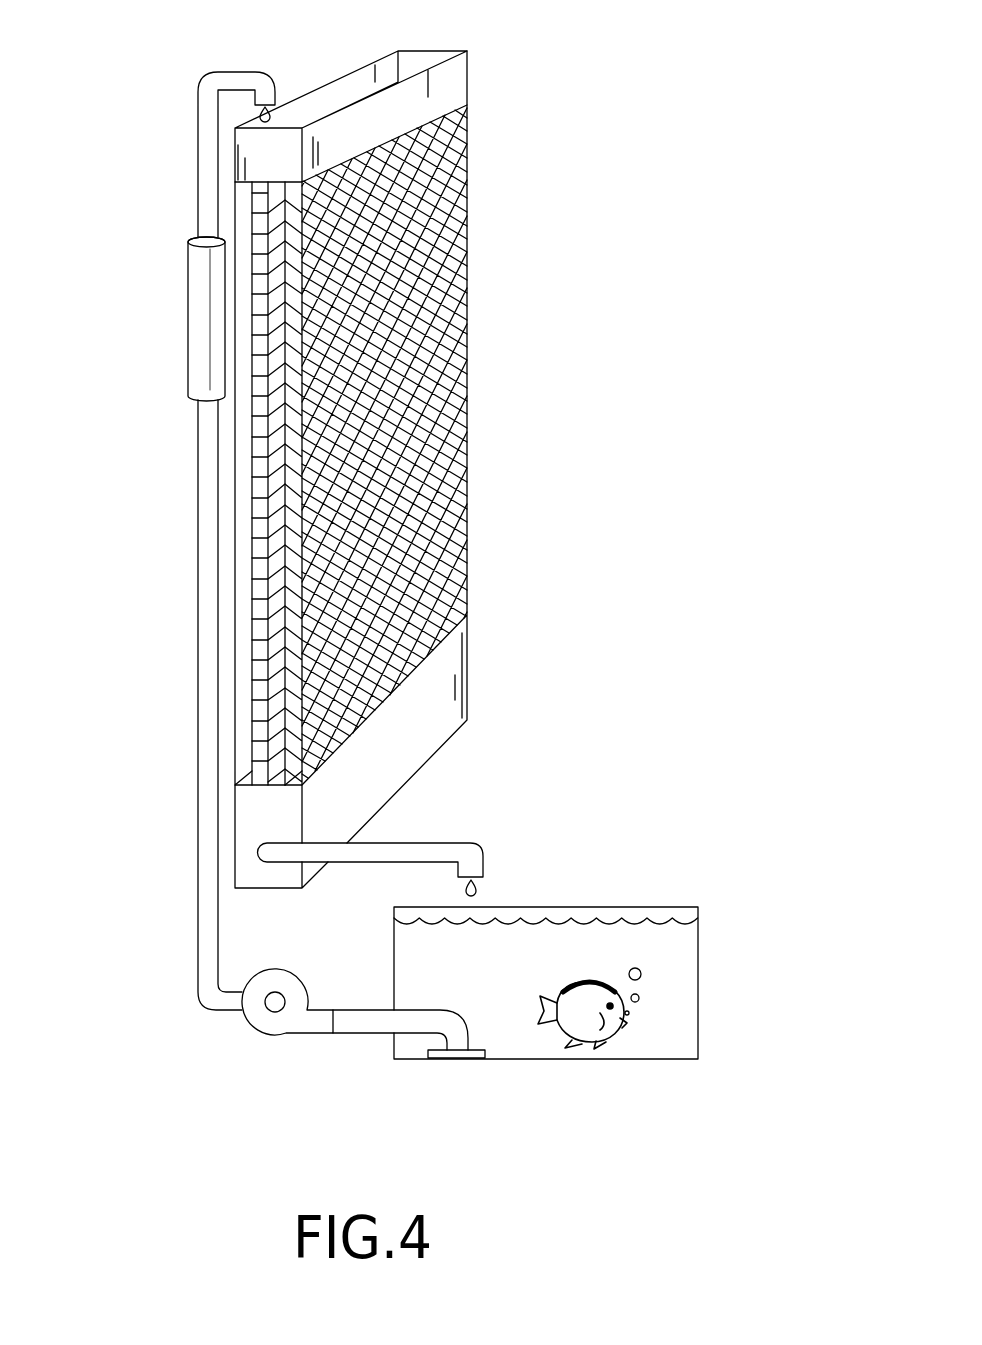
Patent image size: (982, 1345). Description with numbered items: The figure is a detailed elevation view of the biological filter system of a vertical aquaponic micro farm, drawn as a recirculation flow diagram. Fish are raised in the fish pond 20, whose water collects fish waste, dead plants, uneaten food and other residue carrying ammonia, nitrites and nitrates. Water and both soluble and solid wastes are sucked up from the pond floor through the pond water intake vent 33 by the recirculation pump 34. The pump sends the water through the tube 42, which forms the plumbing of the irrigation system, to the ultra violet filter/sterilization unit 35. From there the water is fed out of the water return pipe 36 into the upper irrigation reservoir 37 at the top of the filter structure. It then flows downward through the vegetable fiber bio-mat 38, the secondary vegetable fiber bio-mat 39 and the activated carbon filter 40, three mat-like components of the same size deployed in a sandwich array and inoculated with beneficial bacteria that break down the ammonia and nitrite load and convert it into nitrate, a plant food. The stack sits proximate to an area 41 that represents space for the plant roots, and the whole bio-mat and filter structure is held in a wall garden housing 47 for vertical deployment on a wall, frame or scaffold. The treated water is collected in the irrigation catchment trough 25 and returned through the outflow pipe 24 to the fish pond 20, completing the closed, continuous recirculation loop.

The fish pond 20 is at (700, 960).
The outflow pipe 24 is at (485, 853).
The irrigation catchment trough 25 is at (410, 760).
The pond water intake vent 33 is at (478, 1060).
The recirculation pump 34 is at (292, 1032).
The ultra violet filter/sterilization unit 35 is at (194, 314).
The water return pipe 36 is at (232, 72).
The upper irrigation reservoir 37 is at (458, 77).
The vegetable fiber bio-mat 38 is at (283, 410).
The secondary vegetable fiber bio-mat 39 is at (275, 482).
The activated carbon filter 40 is at (258, 537).
The area for plant roots 41 is at (240, 600).
The tube 42 is at (205, 830).
The wall garden housing 47 is at (233, 693).